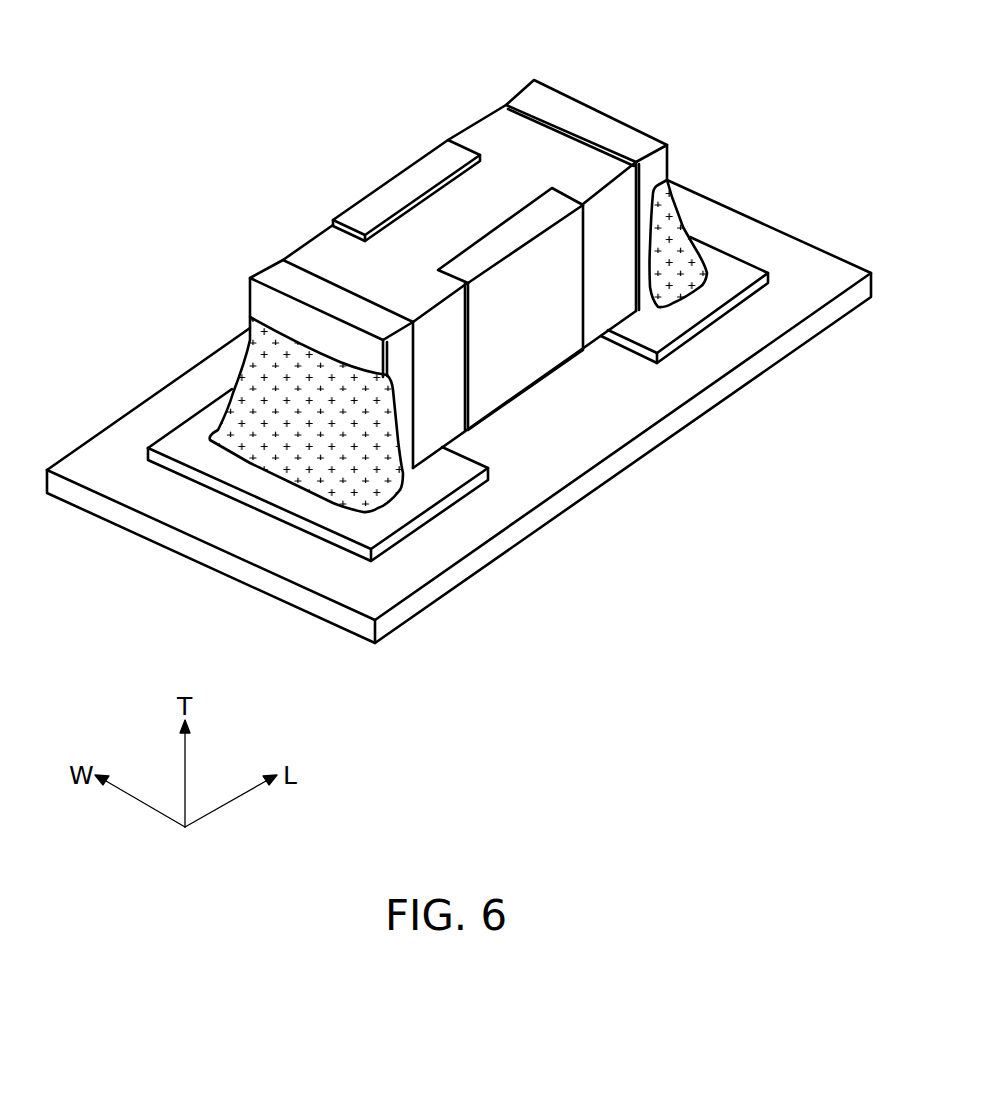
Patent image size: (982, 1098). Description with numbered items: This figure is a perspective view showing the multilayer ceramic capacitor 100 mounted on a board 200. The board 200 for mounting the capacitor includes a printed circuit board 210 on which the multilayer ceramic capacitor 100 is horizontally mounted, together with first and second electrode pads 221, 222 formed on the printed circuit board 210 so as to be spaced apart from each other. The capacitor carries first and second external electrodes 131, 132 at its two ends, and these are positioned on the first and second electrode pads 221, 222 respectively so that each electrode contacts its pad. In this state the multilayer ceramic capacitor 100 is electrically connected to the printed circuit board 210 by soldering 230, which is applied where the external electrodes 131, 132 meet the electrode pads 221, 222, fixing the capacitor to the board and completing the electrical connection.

The multilayer ceramic capacitor 100 is at (449, 239).
The first external electrode 131 is at (275, 273).
The second external electrode 132 is at (528, 95).
The board for mounting a multilayer ceramic capacitor 200 is at (459, 382).
The printed circuit board 210 is at (575, 492).
The first electrode pad 221 is at (403, 510).
The second electrode pad 222 is at (648, 332).
The soldering 230 is at (243, 378).